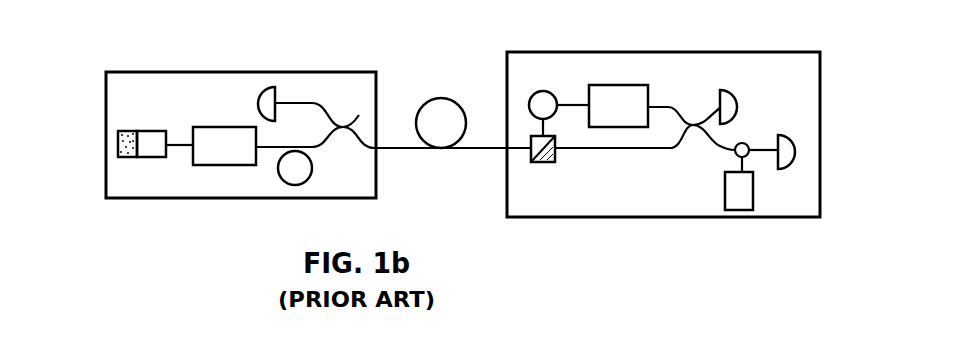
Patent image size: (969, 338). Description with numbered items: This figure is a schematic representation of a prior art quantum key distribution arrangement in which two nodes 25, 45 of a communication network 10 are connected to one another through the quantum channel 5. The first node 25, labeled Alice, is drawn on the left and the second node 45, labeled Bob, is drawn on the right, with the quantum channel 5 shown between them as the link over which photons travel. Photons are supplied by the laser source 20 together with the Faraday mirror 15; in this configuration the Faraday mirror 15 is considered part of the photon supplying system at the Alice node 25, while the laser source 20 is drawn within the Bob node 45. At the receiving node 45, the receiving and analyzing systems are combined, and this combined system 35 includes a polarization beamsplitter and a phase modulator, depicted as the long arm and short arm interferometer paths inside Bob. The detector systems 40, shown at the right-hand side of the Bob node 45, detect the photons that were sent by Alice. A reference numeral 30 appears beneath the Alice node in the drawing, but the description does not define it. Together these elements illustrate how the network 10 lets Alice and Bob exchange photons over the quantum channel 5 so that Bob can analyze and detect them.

The quantum channel 5 is at (442, 97).
The communication network 10 is at (566, 243).
The Faraday mirror 15 is at (118, 146).
The laser source 20 is at (744, 211).
The node 25 is at (171, 71).
The Alice apparatus 30 is at (348, 164).
The combined system 35 is at (673, 68).
The detector systems 40 is at (738, 94).
The node 45 is at (768, 52).